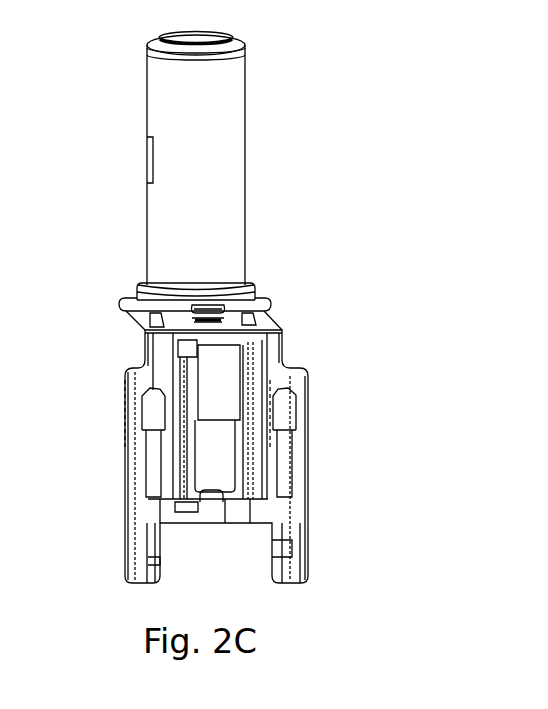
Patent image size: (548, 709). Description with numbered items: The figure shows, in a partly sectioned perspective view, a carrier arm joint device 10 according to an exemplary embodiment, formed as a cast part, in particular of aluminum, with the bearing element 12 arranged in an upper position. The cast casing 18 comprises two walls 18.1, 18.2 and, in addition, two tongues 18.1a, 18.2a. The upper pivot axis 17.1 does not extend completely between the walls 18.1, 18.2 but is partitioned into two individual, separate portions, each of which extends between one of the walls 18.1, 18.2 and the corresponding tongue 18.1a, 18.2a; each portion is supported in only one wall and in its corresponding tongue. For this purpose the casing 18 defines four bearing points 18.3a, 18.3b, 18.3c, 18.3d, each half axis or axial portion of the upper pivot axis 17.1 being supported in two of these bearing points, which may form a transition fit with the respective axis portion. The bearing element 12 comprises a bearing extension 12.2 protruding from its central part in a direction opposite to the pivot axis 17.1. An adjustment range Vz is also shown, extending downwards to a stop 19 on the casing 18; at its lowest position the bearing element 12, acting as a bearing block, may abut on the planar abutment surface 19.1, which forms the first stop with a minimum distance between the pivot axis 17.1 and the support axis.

The carrier arm joint device 10 is at (111, 306).
The bearing element 12 is at (237, 350).
The bearing extension 12.2 is at (213, 353).
The upper pivot axis 17.1 is at (155, 472).
The casing 18 is at (116, 595).
The wall 18.1 is at (130, 530).
The tongue 18.1a is at (124, 410).
The wall 18.2 is at (310, 548).
The tongue 18.2a is at (264, 420).
The bearing point 18.3a is at (127, 485).
The bearing point 18.3b is at (140, 493).
The bearing point 18.3c is at (305, 477).
The bearing point 18.3d is at (313, 480).
The stop 19 is at (225, 506).
The planar abutment surface 19.1 is at (220, 512).
The adjustment range Vz is at (240, 482).